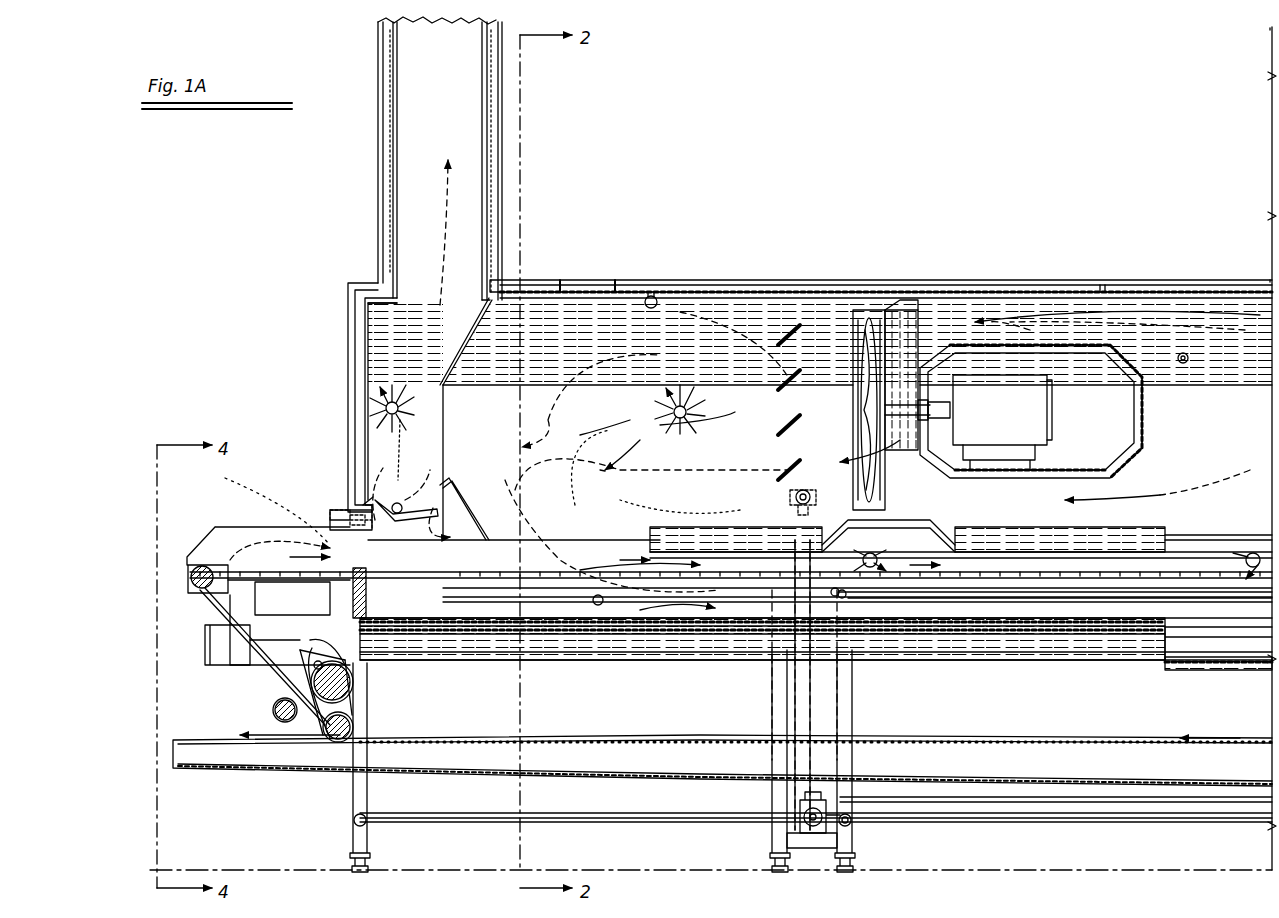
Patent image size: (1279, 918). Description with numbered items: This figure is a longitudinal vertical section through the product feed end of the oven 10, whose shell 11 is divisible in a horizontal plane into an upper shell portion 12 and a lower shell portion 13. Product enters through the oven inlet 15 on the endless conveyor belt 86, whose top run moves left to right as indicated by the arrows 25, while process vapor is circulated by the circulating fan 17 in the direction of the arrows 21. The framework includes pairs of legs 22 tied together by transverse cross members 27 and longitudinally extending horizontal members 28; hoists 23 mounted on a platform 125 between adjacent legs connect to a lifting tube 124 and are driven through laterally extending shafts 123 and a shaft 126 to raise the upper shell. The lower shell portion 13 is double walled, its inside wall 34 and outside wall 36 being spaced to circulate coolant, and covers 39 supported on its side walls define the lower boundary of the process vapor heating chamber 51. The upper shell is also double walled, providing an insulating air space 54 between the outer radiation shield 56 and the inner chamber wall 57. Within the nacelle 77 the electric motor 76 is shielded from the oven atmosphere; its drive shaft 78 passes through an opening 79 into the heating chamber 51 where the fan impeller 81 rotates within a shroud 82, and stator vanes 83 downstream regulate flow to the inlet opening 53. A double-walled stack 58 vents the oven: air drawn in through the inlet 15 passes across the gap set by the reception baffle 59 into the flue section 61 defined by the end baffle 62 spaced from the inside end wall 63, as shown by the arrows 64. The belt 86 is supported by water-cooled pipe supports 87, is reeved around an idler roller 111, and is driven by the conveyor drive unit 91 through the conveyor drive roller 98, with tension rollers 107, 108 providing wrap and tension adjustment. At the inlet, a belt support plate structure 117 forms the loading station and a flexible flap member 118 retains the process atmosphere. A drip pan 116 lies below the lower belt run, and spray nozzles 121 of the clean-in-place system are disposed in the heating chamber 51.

The oven 10 is at (762, 175).
The shell 11 is at (1035, 268).
The upper shell portion 12 is at (342, 375).
The lower shell portion 13 is at (552, 656).
The oven inlet 15 is at (276, 509).
The circulating fan 17 is at (1030, 378).
The arrows 21 is at (540, 447).
The legs 22 is at (352, 840).
The hoists 23 is at (800, 680).
The arrows 25 is at (270, 553).
The cross members 27 is at (354, 818).
The longitudinally extending horizontal members 28 is at (642, 825).
The inside wall 34 is at (1225, 655).
The outside wall 36 is at (1190, 672).
The covers 39 is at (730, 525).
The process vapor heating chamber 51 is at (742, 463).
The inlet opening 53 is at (620, 555).
The insulating air space 54 is at (565, 288).
The outer radiation shield 56 is at (617, 288).
The inner chamber wall 57 is at (657, 296).
The stack 58 is at (485, 140).
The reception baffle 59 is at (450, 505).
The flue section 61 is at (436, 467).
The end baffle 62 is at (446, 420).
The inside end walls 63 is at (372, 445).
The arrows 64 is at (417, 519).
The electric motor 76 is at (1000, 385).
The nacelle 77 is at (1118, 378).
The drive shaft 78 is at (912, 414).
The opening 79 is at (952, 407).
The fan impeller 81 is at (858, 390).
The shroud 82 is at (922, 300).
The stator vanes 83 is at (778, 478).
The endless conveyor belt 86 is at (265, 680).
The pipe supports 87 is at (892, 598).
The conveyor drive unit 91 is at (203, 648).
The conveyor drive roller 98 is at (352, 726).
The tension roller 107 is at (352, 690).
The tension roller 108 is at (273, 716).
The idler roller 111 is at (190, 577).
The drip pan 116 is at (268, 760).
The belt support plate structure 117 is at (352, 580).
The flexible flap member 118 is at (328, 520).
The spray nozzles 121 is at (688, 410).
The laterally extending shafts 123 is at (806, 818).
The lifting tube 124 is at (795, 500).
The platform 125 is at (815, 848).
The shaft 126 is at (1065, 803).